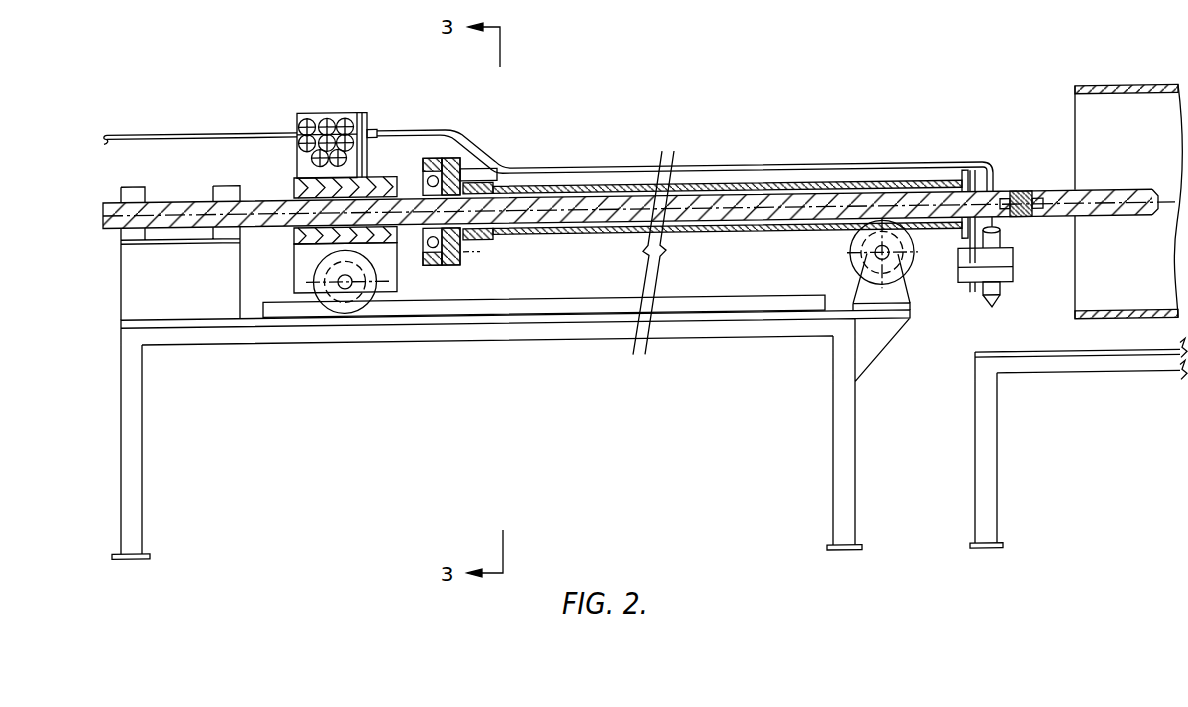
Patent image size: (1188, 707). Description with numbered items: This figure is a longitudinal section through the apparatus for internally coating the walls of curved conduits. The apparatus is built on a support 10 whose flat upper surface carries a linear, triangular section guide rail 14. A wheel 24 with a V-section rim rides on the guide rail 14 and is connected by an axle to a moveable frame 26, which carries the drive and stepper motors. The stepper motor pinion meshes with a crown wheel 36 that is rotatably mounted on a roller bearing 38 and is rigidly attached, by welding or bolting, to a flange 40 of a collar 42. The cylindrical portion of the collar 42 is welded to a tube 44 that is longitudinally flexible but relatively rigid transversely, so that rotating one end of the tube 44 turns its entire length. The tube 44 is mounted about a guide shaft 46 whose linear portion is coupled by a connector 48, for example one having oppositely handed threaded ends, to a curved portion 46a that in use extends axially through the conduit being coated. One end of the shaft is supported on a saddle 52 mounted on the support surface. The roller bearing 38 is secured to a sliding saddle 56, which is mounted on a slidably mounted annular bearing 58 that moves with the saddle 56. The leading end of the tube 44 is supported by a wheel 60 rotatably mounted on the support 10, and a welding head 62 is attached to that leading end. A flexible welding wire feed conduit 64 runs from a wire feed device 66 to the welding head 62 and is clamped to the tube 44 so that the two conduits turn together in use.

The support 10 is at (845, 473).
The guide rail 14 is at (435, 308).
The wheel 24 is at (338, 304).
The moveable frame 26 is at (307, 269).
The crown wheel 36 is at (433, 156).
The roller bearing 38 is at (423, 175).
The flange 40 is at (463, 175).
The collar 42 is at (477, 181).
The tube 44 is at (597, 187).
The guide shaft 46 is at (713, 204).
The curved portion 46a is at (1058, 213).
The connector 48 is at (1018, 198).
The saddle 52 is at (160, 271).
The sliding saddle 56 is at (294, 178).
The annular bearing 58 is at (292, 191).
The wheel 60 is at (900, 266).
The welding head 62 is at (1012, 287).
The welding wire feed conduit 64 is at (798, 171).
The wire feed device 66 is at (297, 111).